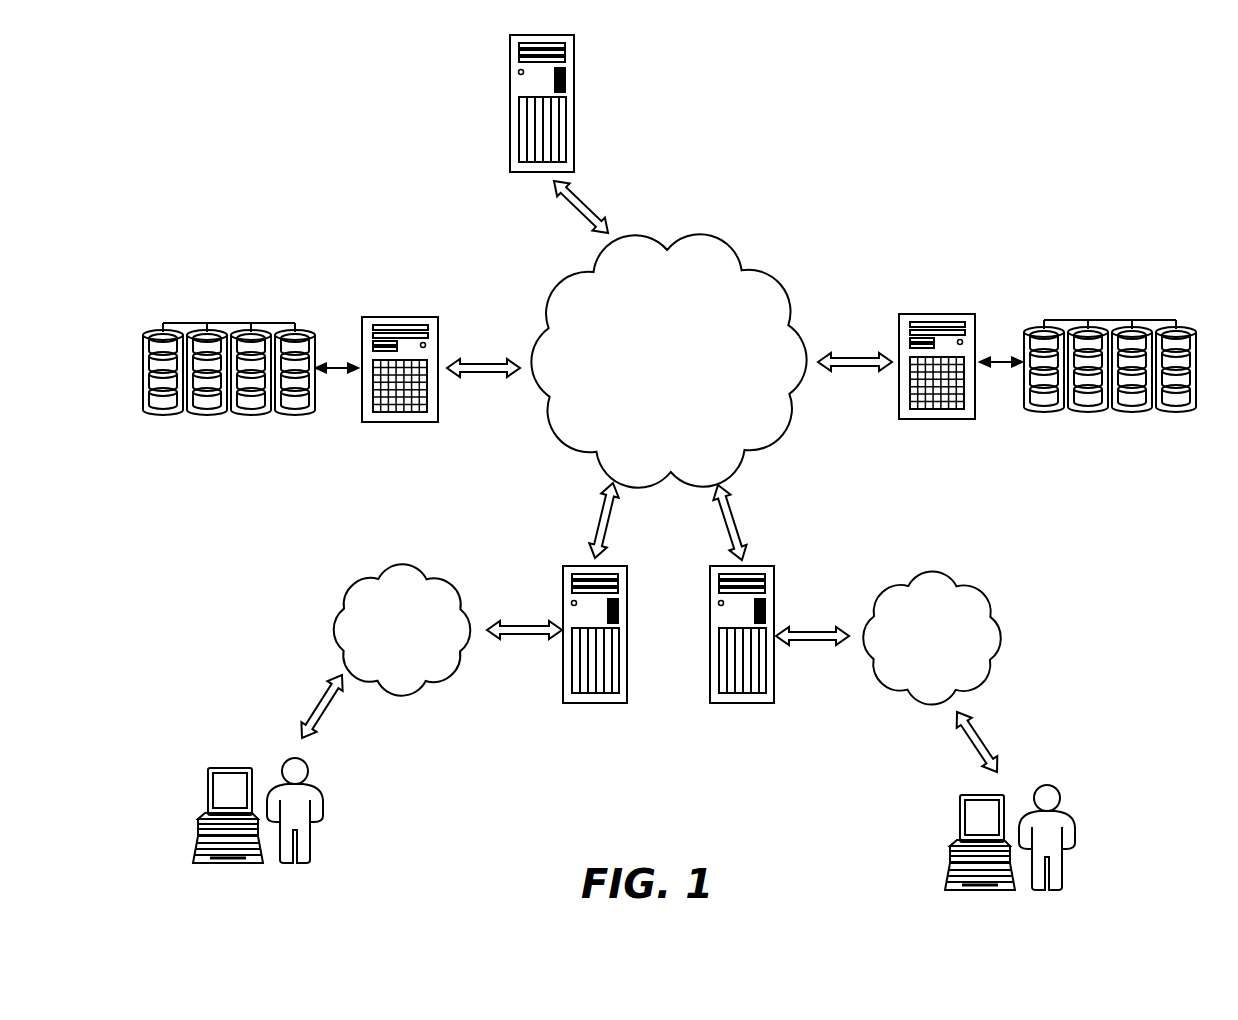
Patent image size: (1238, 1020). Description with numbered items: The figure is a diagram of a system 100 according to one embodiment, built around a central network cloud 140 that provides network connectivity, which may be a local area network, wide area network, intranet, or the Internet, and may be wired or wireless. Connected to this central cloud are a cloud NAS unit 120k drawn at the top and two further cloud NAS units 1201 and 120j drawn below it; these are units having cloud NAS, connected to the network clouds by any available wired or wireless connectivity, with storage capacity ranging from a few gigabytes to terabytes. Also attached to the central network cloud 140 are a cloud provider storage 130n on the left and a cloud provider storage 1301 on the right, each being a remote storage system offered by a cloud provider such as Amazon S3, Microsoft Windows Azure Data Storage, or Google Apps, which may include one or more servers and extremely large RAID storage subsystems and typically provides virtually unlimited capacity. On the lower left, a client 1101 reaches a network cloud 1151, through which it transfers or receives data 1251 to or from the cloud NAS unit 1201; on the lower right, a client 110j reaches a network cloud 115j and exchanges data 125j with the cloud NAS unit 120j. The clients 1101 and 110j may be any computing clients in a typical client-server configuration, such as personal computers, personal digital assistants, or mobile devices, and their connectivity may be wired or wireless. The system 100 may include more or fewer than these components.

The system 100 is at (1046, 220).
The client 1101 is at (337, 796).
The client 110j is at (1052, 785).
The network cloud 1151 is at (459, 569).
The network cloud 115j is at (985, 580).
The cloud NAS unit 1201 is at (575, 703).
The cloud NAS unit 120j is at (721, 703).
The cloud NAS unit 120k is at (574, 112).
The data 1251 is at (515, 623).
The data 125j is at (818, 630).
The cloud provider storage 130n is at (427, 317).
The cloud provider storage 1301 is at (966, 314).
The network cloud 140 is at (763, 252).